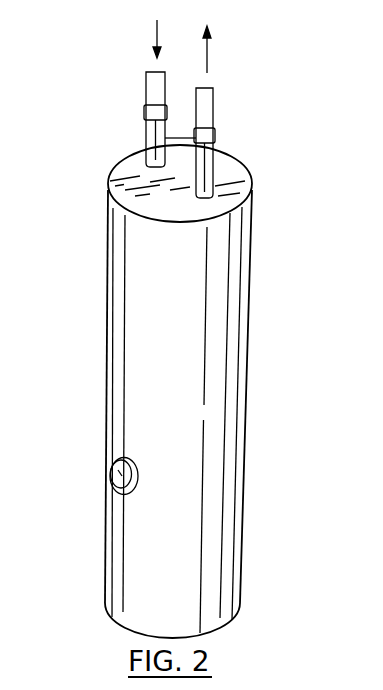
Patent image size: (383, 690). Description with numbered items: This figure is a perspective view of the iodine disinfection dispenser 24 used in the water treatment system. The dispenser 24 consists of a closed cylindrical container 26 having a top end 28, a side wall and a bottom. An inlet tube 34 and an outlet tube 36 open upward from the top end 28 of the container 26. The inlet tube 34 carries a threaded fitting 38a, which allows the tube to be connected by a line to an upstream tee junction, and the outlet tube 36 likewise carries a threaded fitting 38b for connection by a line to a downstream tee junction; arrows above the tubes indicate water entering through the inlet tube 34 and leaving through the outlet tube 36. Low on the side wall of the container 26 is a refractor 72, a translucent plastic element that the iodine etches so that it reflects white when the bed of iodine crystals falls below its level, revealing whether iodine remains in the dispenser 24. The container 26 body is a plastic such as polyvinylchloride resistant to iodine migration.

The iodine disinfection dispenser 24 is at (203, 391).
The closed cylindrical container 26 is at (244, 457).
The top end 28 is at (138, 176).
The inlet tube 34 is at (132, 118).
The outlet tube 36 is at (230, 143).
The threaded fitting 38a is at (145, 109).
The threaded fitting 38b is at (218, 138).
The refractor 72 is at (112, 471).